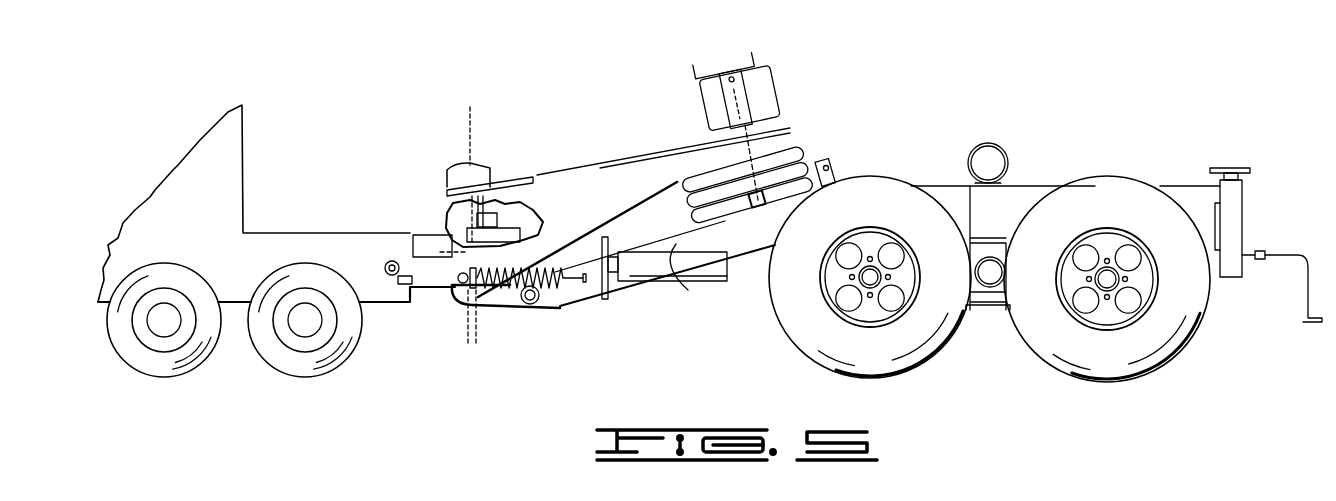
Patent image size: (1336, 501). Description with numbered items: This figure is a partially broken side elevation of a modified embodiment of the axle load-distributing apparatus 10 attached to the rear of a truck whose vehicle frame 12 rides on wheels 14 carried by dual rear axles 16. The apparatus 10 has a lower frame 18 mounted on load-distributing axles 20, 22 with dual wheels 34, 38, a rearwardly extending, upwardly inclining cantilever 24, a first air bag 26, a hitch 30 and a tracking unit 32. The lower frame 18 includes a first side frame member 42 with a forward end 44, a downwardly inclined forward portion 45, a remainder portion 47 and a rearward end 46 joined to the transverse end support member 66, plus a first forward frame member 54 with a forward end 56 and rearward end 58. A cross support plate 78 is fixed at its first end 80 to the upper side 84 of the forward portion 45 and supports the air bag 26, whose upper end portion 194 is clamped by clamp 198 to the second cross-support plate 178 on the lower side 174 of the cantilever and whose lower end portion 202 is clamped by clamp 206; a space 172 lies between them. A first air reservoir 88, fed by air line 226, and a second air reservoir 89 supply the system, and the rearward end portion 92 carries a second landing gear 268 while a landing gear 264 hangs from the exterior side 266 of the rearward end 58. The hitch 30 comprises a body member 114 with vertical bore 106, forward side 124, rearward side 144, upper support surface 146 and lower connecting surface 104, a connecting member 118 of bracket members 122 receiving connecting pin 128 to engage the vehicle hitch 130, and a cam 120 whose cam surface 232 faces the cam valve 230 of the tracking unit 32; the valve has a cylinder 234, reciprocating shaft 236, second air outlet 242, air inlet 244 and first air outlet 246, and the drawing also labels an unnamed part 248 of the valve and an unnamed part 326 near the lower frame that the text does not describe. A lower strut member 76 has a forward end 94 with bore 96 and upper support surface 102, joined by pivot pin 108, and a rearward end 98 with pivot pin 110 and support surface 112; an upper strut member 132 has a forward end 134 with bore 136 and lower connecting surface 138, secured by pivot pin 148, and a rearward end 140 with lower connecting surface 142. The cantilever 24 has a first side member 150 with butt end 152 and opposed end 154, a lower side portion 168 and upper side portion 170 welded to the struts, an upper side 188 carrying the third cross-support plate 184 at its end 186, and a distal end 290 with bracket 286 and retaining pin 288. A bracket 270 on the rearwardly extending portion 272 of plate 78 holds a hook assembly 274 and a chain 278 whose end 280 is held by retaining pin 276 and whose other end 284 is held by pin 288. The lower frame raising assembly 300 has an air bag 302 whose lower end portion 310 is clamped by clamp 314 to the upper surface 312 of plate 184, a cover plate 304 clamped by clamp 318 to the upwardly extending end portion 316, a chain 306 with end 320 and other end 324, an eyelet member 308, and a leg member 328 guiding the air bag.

The axle load-distributing apparatus 10 is at (975, 132).
The vehicle frame 12 is at (287, 256).
The wheels 14 is at (118, 333).
The dual rear axles 16 is at (164, 322).
The lower frame 18 is at (1025, 198).
The load-distributing axle 20 is at (873, 282).
The load-distributing axle 22 is at (1110, 282).
The cantilever 24 is at (605, 88).
The first air bag 26 is at (680, 205).
The hitch 30 is at (408, 190).
The tracking unit 32 is at (440, 305).
The dual wheel 34 is at (827, 348).
The dual wheel 38 is at (1097, 352).
The first side frame member 42 is at (980, 224).
The forward end 44 is at (678, 265).
The forward portion 45 is at (700, 272).
The rearward end 46 is at (1188, 195).
The remainder portion 47 is at (945, 195).
The first forward frame member 54 is at (550, 298).
The forward end 56 is at (530, 303).
The rearward end 58 is at (683, 248).
The transverse end support member 66 is at (1212, 253).
The lower strut member 76 is at (508, 307).
The cross support plate 78 is at (790, 210).
The first end 80 is at (700, 262).
The upper side 84 is at (682, 228).
The first air reservoir 88 is at (990, 158).
The second air reservoir 89 is at (995, 272).
The rearward end portion 92 is at (1238, 196).
The forward end 94 is at (462, 288).
The vertically disposed bore 96 is at (470, 352).
The rearward end 98 is at (515, 300).
The upper support surface 102 is at (455, 302).
The lower connecting surface 104 is at (432, 292).
The vertically disposed bore 106 is at (455, 243).
The pivot pin 108 is at (455, 298).
The pivot pin 110 is at (522, 302).
The support surface 112 is at (547, 276).
The body member 114 is at (415, 208).
The forwardly extending connecting member 118 is at (405, 280).
The cam 120 is at (400, 222).
The bracket members 122 is at (385, 258).
The forward side 124 is at (412, 259).
The connecting pin 128 is at (386, 265).
The hitch 130 is at (383, 305).
The upper strut member 132 is at (480, 180).
The forward end 134 is at (468, 188).
The vertically disposed bore 136 is at (476, 195).
The lower connecting surface 138 is at (458, 197).
The rearward end 140 is at (500, 178).
The lower connecting surface 142 is at (508, 185).
The rearward side 144 is at (522, 183).
The upper support surface 146 is at (455, 198).
The pivot pin 148 is at (470, 210).
The first side member 150 is at (565, 178).
The butt end 152 is at (473, 274).
The opposed end 154 is at (795, 125).
The lower side portion 168 is at (478, 266).
The upper side portion 170 is at (512, 195).
The space 172 is at (650, 213).
The lower side 174 is at (697, 178).
The second cross-support plate 178 is at (760, 162).
The third cross-support plate 184 is at (690, 135).
The end 186 is at (680, 150).
The upper side 188 is at (640, 152).
The upper end portion 194 is at (818, 172).
The clamp 198 is at (805, 150).
The lower end portion 202 is at (805, 192).
The clamp 206 is at (738, 212).
The air line 226 is at (600, 292).
The cam valve 230 is at (522, 215).
The cam surface 232 is at (468, 190).
The cylinder 234 is at (430, 227).
The reciprocating shaft 236 is at (487, 180).
The second air outlet 242 is at (505, 255).
The air inlet 244 is at (515, 230).
The first air outlet 246 is at (530, 210).
The slide block 248 is at (505, 240).
The landing gear 264 is at (615, 290).
The exterior side 266 is at (645, 255).
The second landing gear 268 is at (1230, 210).
The bracket 270 is at (832, 176).
The rearwardly extending portion 272 is at (830, 178).
The hook assembly 274 is at (842, 168).
The retaining pin 276 is at (825, 182).
The chain 278 is at (832, 150).
The end 280 is at (812, 185).
The other end 284 is at (815, 160).
The bracket 286 is at (805, 160).
The retaining pin 288 is at (812, 165).
The distal end 290 is at (795, 140).
The lower frame raising assembly 300 is at (770, 35).
The air bag 302 is at (700, 95).
The cover plate 304 is at (718, 36).
The chain 306 is at (775, 120).
The eyelet member 308 is at (770, 205).
The lower end portion 310 is at (700, 122).
The upper surface 312 is at (775, 130).
The clamp 314 is at (732, 150).
The upwardly extending end portion 316 is at (742, 88).
The clamp 318 is at (698, 62).
The end 320 is at (748, 108).
The other end 324 is at (662, 190).
The bracket 326 is at (800, 200).
The leg member 328 is at (705, 110).